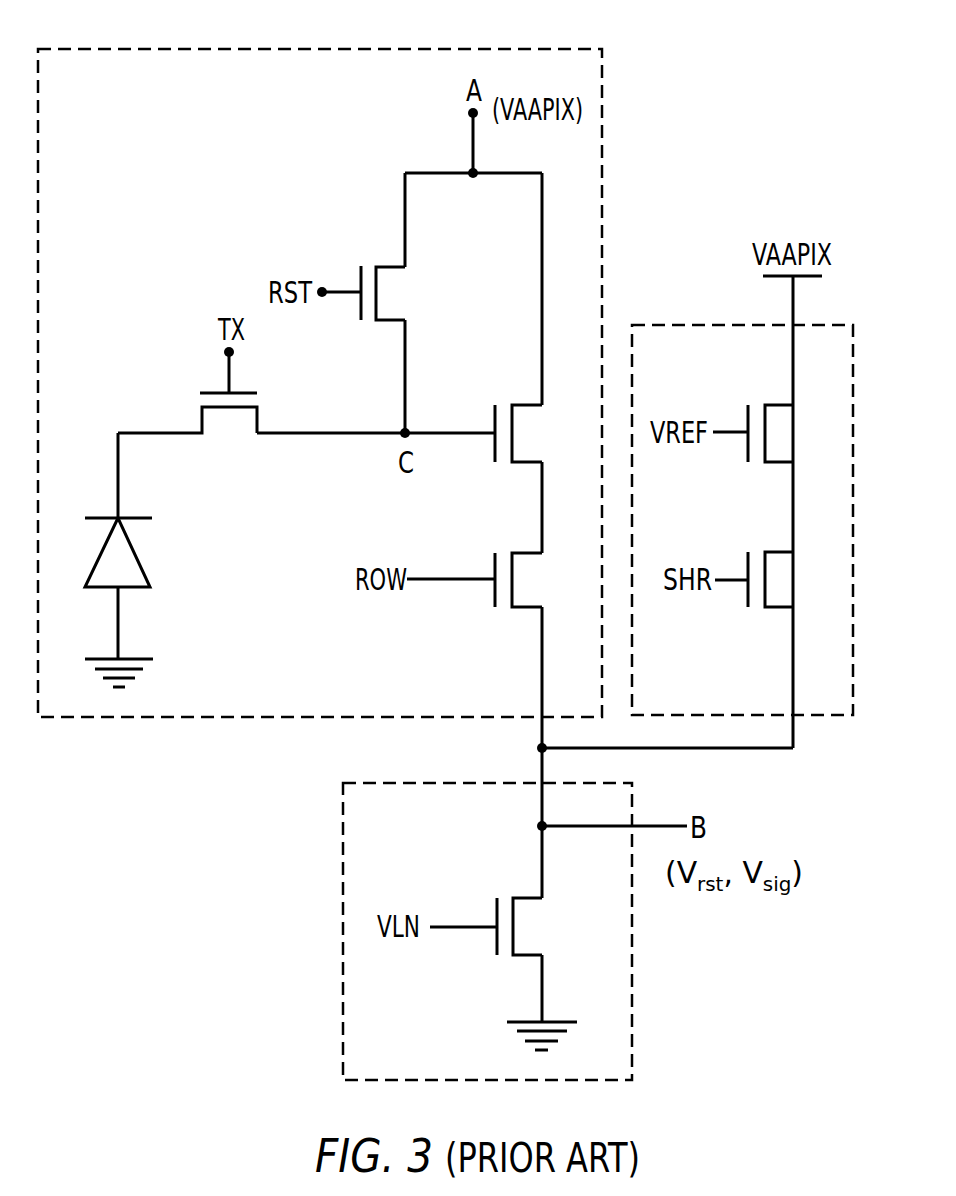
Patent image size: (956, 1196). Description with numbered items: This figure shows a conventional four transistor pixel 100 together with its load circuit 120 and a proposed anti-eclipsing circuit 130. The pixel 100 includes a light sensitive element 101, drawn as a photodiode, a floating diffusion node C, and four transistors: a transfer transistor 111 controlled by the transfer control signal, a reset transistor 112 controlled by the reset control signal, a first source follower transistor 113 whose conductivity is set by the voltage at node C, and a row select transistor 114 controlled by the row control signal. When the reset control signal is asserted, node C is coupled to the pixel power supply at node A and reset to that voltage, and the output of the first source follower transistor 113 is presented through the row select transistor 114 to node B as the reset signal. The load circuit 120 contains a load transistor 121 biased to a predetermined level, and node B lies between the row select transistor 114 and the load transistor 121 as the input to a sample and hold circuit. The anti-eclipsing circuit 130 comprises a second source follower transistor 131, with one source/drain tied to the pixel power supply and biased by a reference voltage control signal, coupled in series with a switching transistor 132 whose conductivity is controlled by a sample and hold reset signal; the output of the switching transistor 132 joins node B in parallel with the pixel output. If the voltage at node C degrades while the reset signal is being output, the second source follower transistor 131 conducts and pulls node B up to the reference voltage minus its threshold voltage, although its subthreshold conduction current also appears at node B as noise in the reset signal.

The pixel 100 is at (133, 47).
The light sensitive element 101 is at (120, 567).
The transfer transistor 111 is at (199, 420).
The reset transistor 112 is at (392, 265).
The first source follower transistor 113 is at (522, 404).
The row select transistor 114 is at (523, 551).
The load circuit 120 is at (343, 873).
The load transistor 121 is at (523, 897).
The anti-eclipsing circuit 130 is at (700, 323).
The second source follower transistor 131 is at (775, 403).
The switching transistor 132 is at (775, 551).